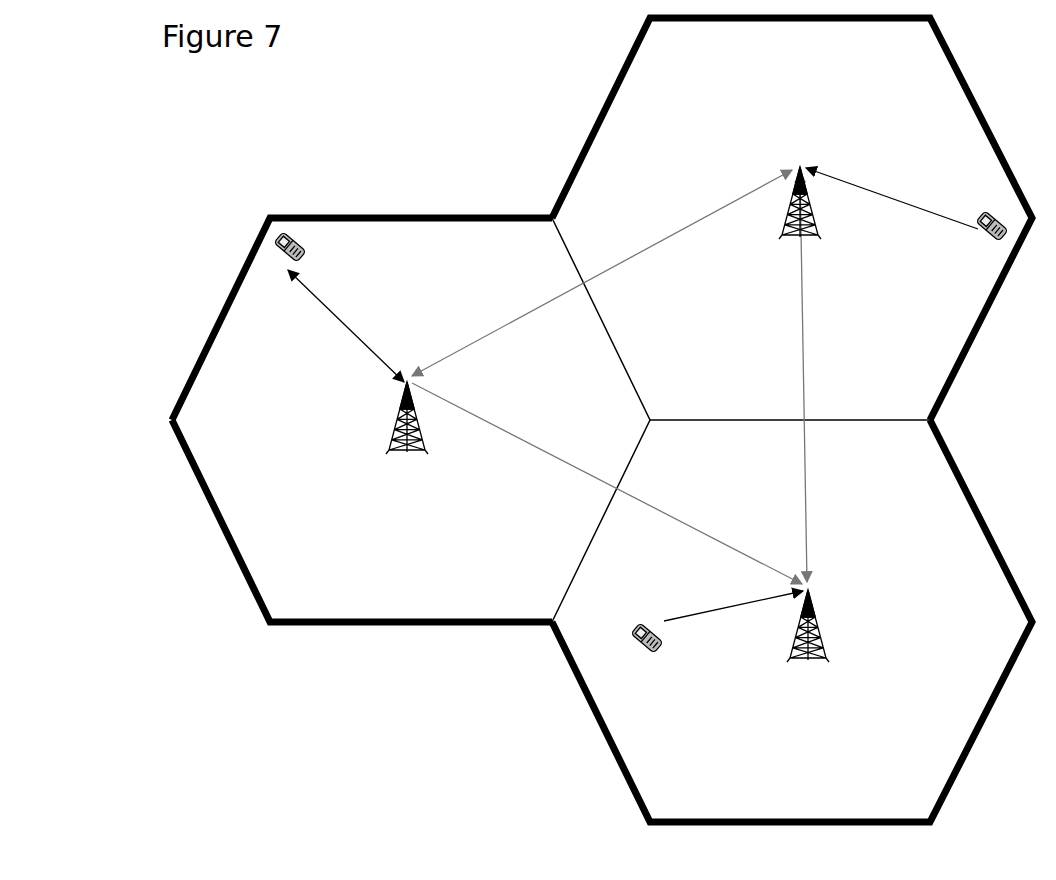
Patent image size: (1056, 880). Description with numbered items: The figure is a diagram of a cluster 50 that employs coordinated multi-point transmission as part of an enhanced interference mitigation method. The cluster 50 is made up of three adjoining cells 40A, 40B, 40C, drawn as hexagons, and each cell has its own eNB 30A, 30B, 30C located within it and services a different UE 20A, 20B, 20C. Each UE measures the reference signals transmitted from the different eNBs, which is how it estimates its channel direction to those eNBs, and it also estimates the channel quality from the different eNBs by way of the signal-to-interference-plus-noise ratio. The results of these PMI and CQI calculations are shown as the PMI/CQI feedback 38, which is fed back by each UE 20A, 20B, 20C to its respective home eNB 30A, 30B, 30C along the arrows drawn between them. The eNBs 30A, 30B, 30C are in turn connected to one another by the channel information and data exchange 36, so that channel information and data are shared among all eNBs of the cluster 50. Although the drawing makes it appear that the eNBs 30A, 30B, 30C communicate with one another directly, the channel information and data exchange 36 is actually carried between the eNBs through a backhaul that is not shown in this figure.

The UE 20A is at (289, 275).
The UE 20B is at (990, 252).
The UE 20C is at (648, 668).
The eNB 30A is at (407, 470).
The eNB 30B is at (809, 252).
The eNB 30C is at (817, 670).
The cell 40A is at (411, 420).
The cell 40B is at (792, 219).
The cell 40C is at (792, 621).
The channel information and data exchange 36 is at (619, 377).
The PMI/CQI feedback 38 is at (630, 397).
The cluster 50 is at (527, 168).